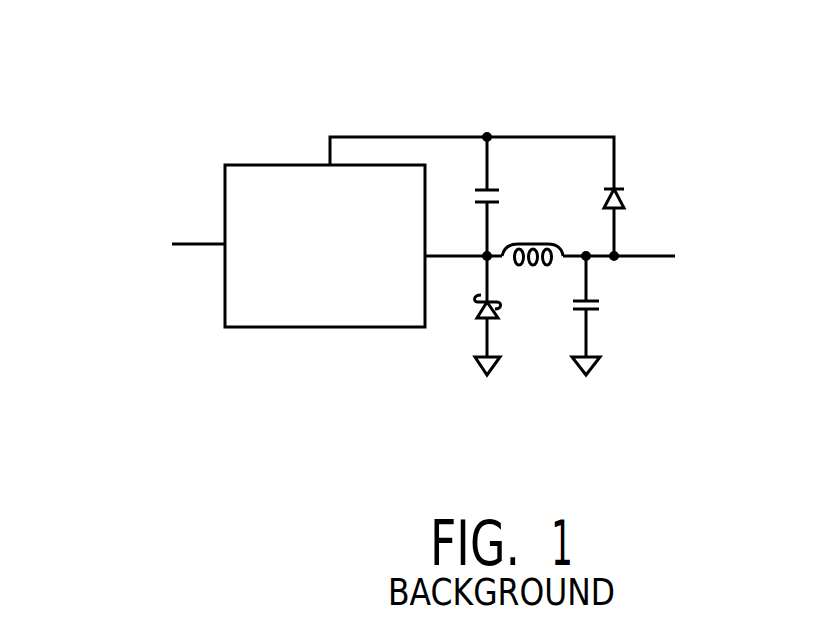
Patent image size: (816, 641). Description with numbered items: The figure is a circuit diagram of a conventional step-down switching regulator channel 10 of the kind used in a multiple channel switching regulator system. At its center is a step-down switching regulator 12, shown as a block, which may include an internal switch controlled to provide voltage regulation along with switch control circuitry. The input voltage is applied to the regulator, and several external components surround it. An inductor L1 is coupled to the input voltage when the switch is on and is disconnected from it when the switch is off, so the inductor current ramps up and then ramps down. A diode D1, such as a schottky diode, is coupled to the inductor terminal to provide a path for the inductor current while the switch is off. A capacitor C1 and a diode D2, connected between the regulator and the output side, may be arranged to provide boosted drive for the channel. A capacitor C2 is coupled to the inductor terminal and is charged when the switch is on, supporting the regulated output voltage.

The step-down switching regulator channel 10 is at (344, 88).
The step-down switching regulator 12 is at (223, 200).
The capacitor C1 is at (469, 196).
The inductor L1 is at (532, 232).
The diode D1 is at (505, 315).
The diode D2 is at (636, 214).
The capacitor C2 is at (603, 315).